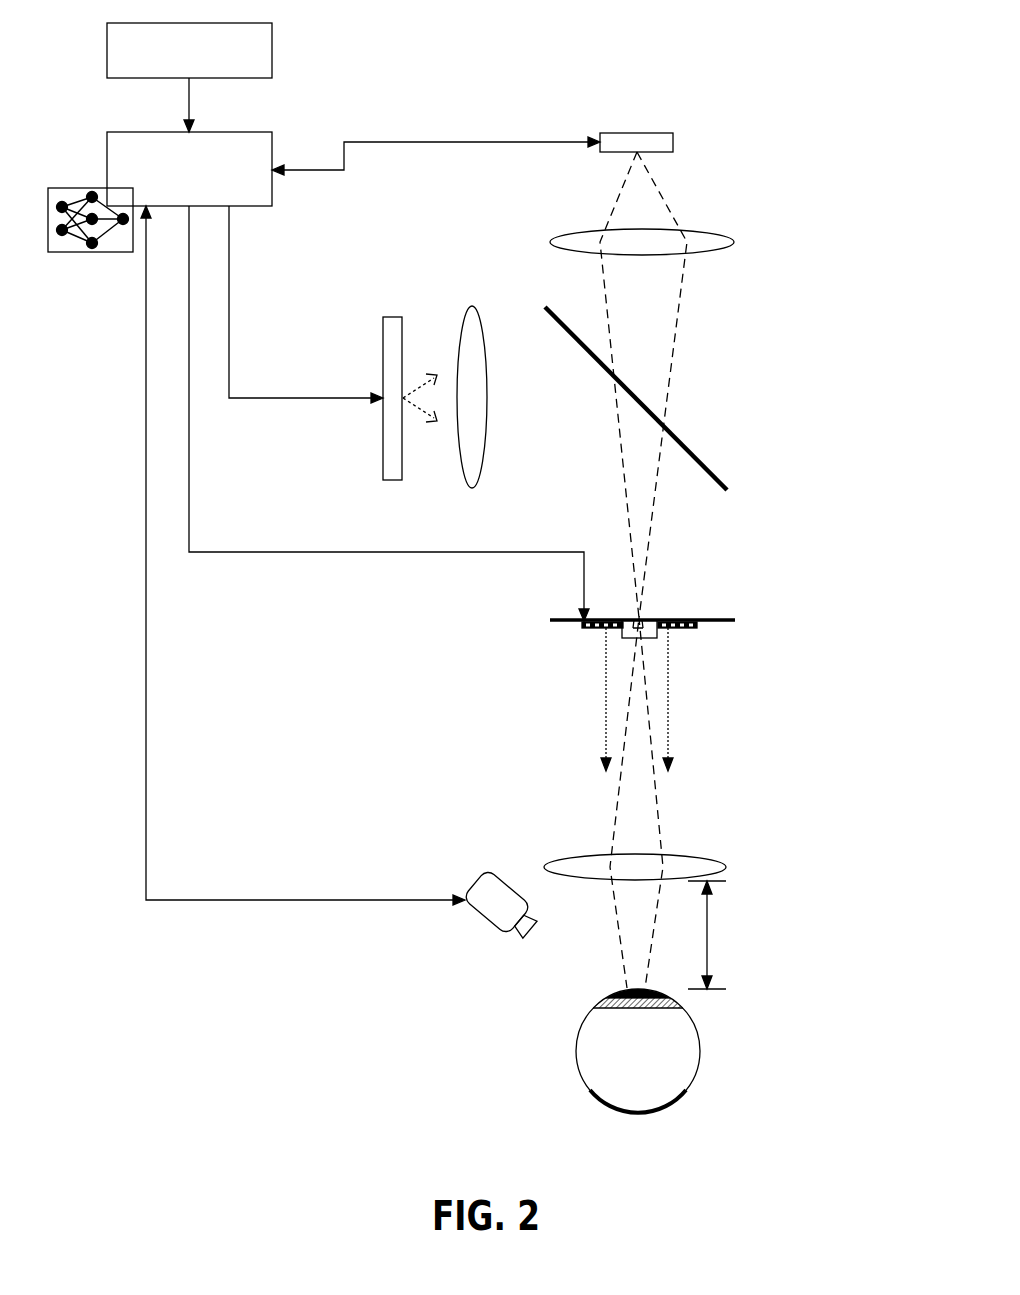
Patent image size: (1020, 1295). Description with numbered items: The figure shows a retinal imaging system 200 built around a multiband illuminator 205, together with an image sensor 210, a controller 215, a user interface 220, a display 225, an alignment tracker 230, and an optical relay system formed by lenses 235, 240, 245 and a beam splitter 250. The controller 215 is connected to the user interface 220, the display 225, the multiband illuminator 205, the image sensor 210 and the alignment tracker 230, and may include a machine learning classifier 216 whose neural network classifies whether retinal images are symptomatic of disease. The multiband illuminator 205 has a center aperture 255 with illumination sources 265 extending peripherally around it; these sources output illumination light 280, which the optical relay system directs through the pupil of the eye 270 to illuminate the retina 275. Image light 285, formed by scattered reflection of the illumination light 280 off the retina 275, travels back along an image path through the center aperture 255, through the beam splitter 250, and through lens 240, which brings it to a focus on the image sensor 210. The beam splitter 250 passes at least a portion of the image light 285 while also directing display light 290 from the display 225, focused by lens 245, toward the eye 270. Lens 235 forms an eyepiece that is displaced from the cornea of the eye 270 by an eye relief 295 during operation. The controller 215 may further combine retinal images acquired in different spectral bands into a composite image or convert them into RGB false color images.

The retinal imaging system 200 is at (236, 1053).
The multiband illuminator 205 is at (742, 702).
The image sensor 210 is at (673, 142).
The controller 215 is at (205, 196).
The machine learning classifier 216 is at (66, 253).
The user interface 220 is at (248, 64).
The display 225 is at (383, 360).
The alignment tracker 230 is at (483, 875).
The lens 235 is at (727, 867).
The lens 240 is at (733, 242).
The lens 245 is at (470, 312).
The beam splitter 250 is at (727, 484).
The center aperture 255 is at (623, 640).
The illumination sources 265 is at (565, 642).
The eye 270 is at (652, 1067).
The retina 275 is at (652, 1113).
The illumination light 280 is at (670, 722).
The image light 285 is at (652, 524).
The display light 290 is at (418, 412).
The eye relief 295 is at (707, 935).